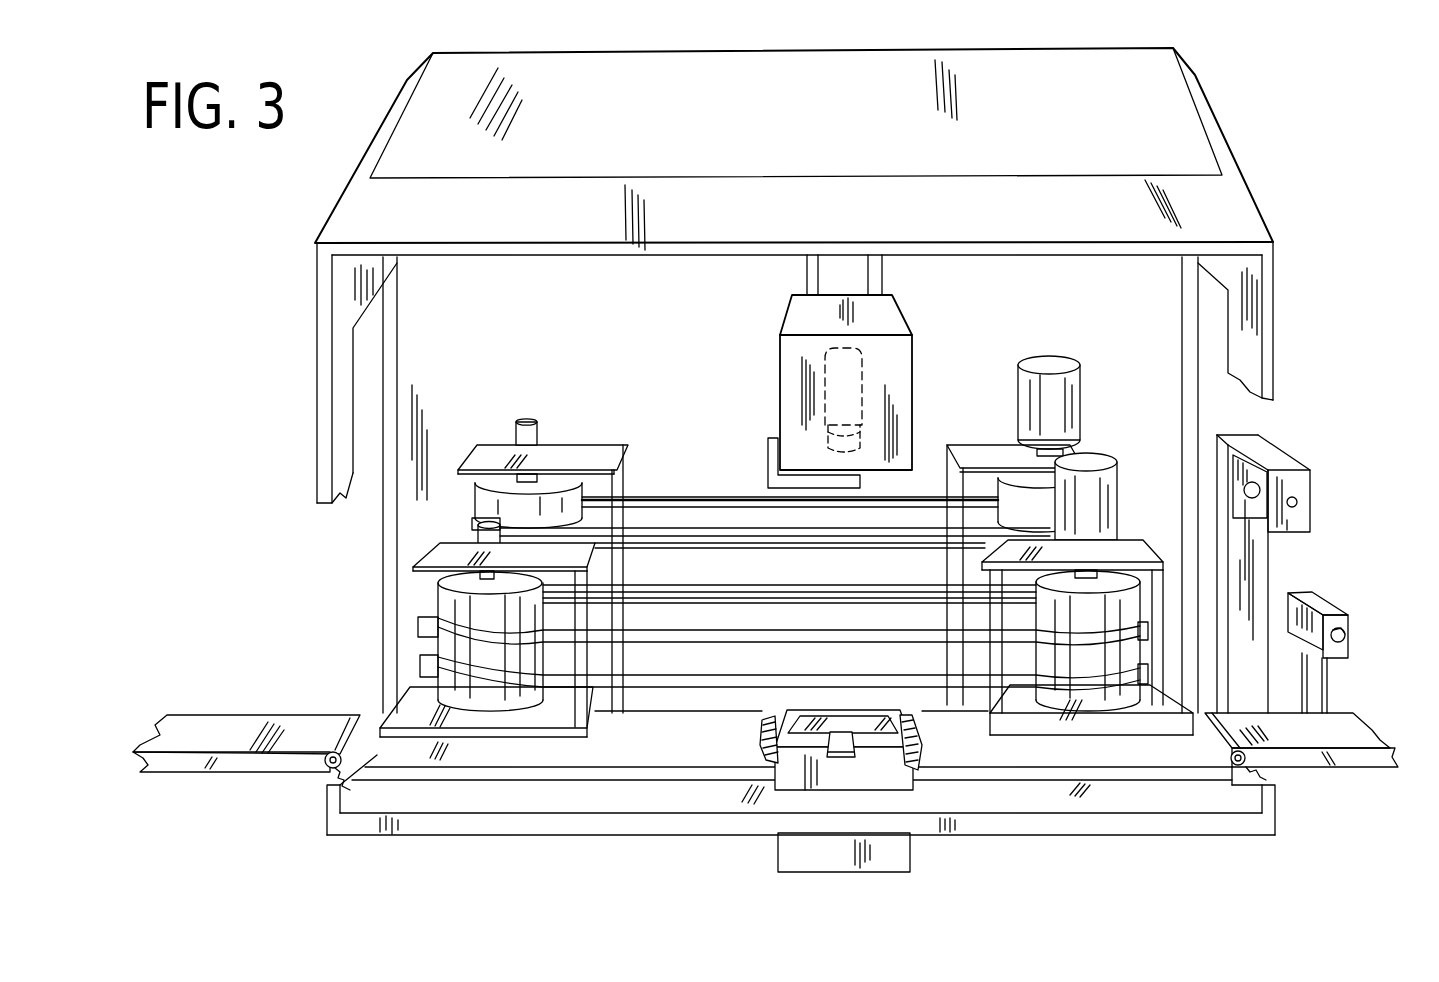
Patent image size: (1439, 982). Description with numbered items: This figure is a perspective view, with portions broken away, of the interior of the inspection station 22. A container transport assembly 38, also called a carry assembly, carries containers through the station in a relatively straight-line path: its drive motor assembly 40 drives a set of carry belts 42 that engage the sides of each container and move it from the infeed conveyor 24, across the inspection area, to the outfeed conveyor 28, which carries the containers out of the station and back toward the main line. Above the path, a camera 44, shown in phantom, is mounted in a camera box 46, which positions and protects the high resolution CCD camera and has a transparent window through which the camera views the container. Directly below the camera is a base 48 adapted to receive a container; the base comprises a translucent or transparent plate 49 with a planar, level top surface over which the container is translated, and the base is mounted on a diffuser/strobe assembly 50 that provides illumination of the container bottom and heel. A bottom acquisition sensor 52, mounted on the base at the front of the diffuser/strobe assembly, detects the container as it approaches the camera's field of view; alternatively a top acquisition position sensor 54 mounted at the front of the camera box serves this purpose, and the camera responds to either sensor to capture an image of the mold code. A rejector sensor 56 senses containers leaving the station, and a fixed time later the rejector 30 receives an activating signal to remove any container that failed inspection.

The inspection station 22 is at (1228, 132).
The infeed conveyor 24 is at (310, 713).
The outfeed conveyor 28 is at (1335, 713).
The rejector 30 is at (1322, 595).
The container transport assembly 38 is at (365, 652).
The drive motor assembly 40 is at (1122, 425).
The carry belts 42 is at (655, 490).
The camera 44 is at (823, 395).
The camera box 46 is at (902, 310).
The base 48 is at (775, 720).
The plate 49 is at (905, 727).
The diffuser/strobe assembly 50 is at (778, 855).
The bottom acquisition sensor 52 is at (855, 758).
The top acquisition position sensor 54 is at (768, 463).
The rejector sensor 56 is at (1313, 500).